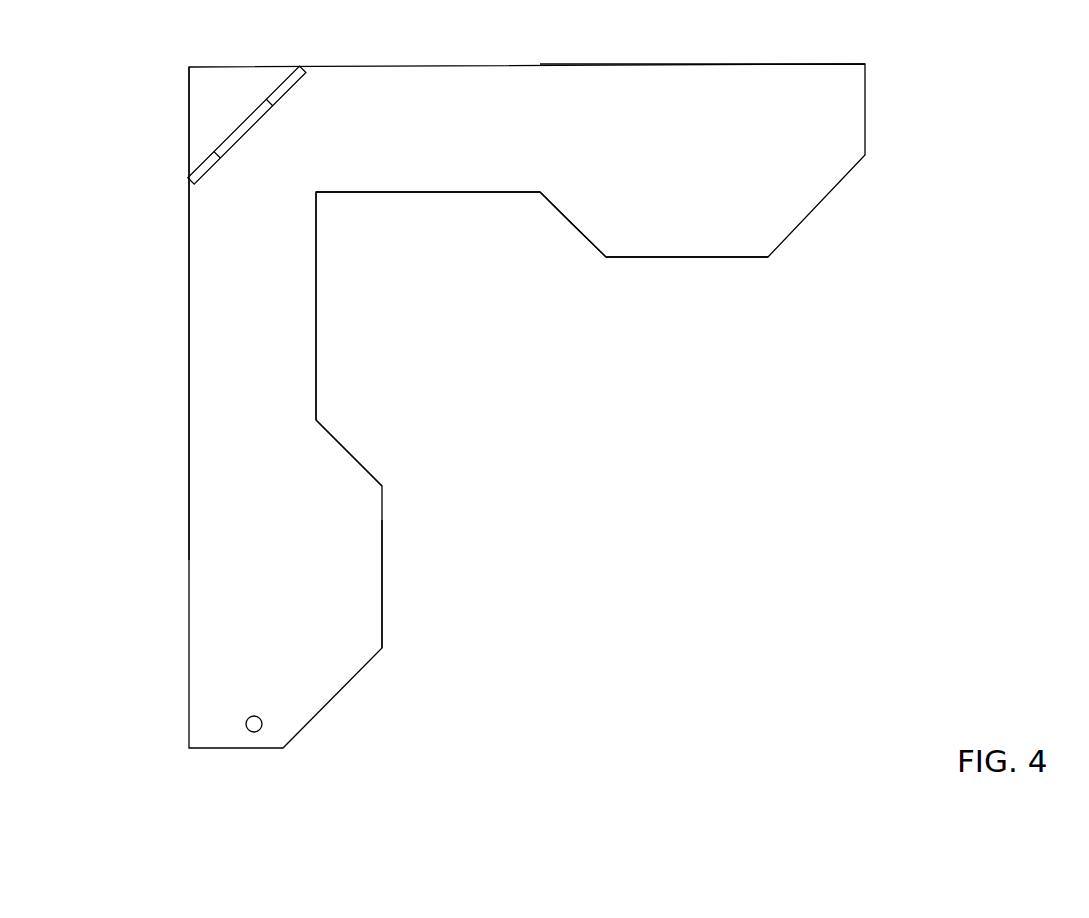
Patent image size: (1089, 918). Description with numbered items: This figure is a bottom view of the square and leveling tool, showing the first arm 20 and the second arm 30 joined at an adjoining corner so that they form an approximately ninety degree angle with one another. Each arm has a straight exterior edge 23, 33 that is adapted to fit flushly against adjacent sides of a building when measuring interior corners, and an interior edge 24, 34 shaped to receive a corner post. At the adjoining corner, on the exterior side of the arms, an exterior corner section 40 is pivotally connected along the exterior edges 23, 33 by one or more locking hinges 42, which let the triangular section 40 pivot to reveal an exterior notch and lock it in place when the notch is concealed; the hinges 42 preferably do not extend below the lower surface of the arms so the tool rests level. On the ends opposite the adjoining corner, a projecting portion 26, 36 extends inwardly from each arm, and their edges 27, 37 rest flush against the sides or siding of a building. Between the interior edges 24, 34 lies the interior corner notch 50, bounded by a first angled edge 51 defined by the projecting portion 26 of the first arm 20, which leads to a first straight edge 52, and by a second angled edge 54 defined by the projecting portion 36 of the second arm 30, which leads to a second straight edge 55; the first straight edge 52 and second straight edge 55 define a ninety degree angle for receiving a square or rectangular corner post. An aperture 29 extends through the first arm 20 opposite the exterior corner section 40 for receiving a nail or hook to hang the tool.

The first arm 20 is at (230, 373).
The exterior edge 23 is at (189, 495).
The interior edge 24 is at (378, 470).
The projecting portion 26 is at (360, 580).
The edge 27 is at (382, 610).
The aperture 29 is at (262, 728).
The second arm 30 is at (577, 105).
The exterior edge 33 is at (668, 64).
The interior edge 34 is at (580, 250).
The projecting portion 36 is at (665, 242).
The edge 37 is at (720, 257).
The exterior corner section 40 is at (189, 105).
The locking hinge 42 is at (278, 82).
The interior corner notch 50 is at (445, 308).
The first angled edge 51 is at (347, 445).
The first straight edge 52 is at (316, 350).
The second angled edge 54 is at (563, 218).
The second straight edge 55 is at (405, 192).